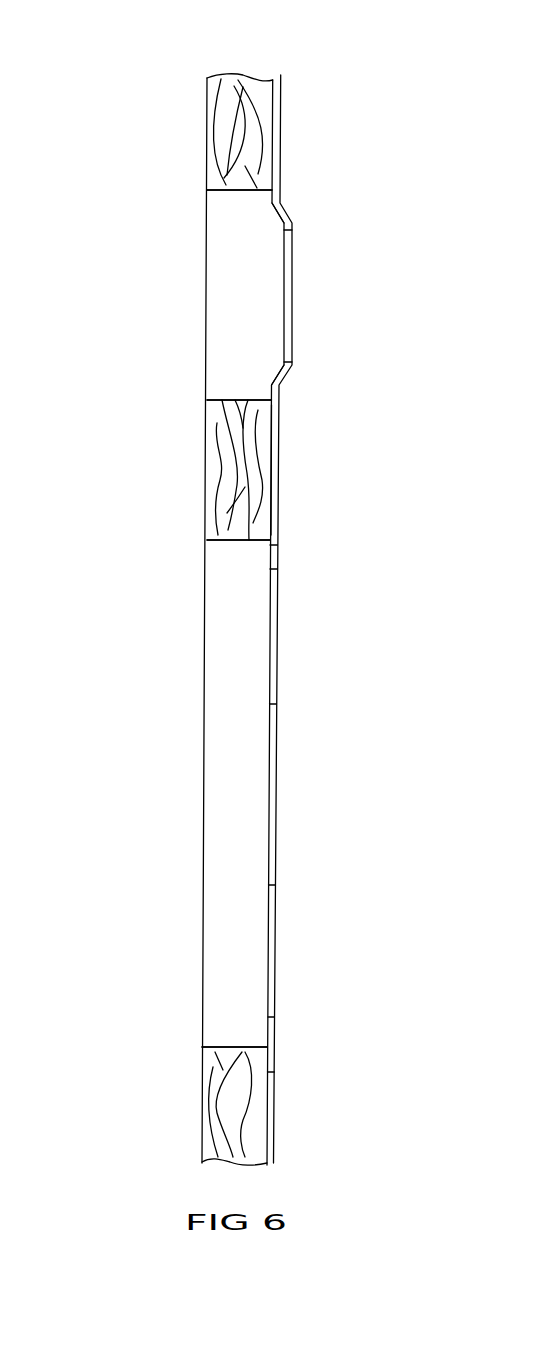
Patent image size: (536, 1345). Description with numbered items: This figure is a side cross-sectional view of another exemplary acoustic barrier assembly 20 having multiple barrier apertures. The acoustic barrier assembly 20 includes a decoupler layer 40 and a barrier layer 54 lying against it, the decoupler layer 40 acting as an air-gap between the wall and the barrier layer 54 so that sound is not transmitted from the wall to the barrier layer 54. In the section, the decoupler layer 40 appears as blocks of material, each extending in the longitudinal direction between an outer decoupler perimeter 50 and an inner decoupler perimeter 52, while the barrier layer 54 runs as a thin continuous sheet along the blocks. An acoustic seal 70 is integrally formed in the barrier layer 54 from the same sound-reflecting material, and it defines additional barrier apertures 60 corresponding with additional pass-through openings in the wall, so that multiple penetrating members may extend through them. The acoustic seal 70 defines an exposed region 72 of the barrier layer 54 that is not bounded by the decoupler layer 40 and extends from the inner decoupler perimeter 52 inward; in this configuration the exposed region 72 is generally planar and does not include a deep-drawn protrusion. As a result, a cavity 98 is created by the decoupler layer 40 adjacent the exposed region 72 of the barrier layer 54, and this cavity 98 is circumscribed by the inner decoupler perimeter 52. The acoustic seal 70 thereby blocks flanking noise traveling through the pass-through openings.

The acoustic barrier assembly 20 is at (105, 207).
The decoupler layer 40 is at (226, 483).
The outer decoupler perimeter 50 is at (226, 76).
The inner decoupler perimeter 52 is at (238, 192).
The barrier layer 54 is at (274, 437).
The barrier aperture 60 is at (294, 330).
The acoustic seal 70 is at (325, 283).
The exposed region 72 is at (270, 213).
The cavity 98 is at (243, 304).